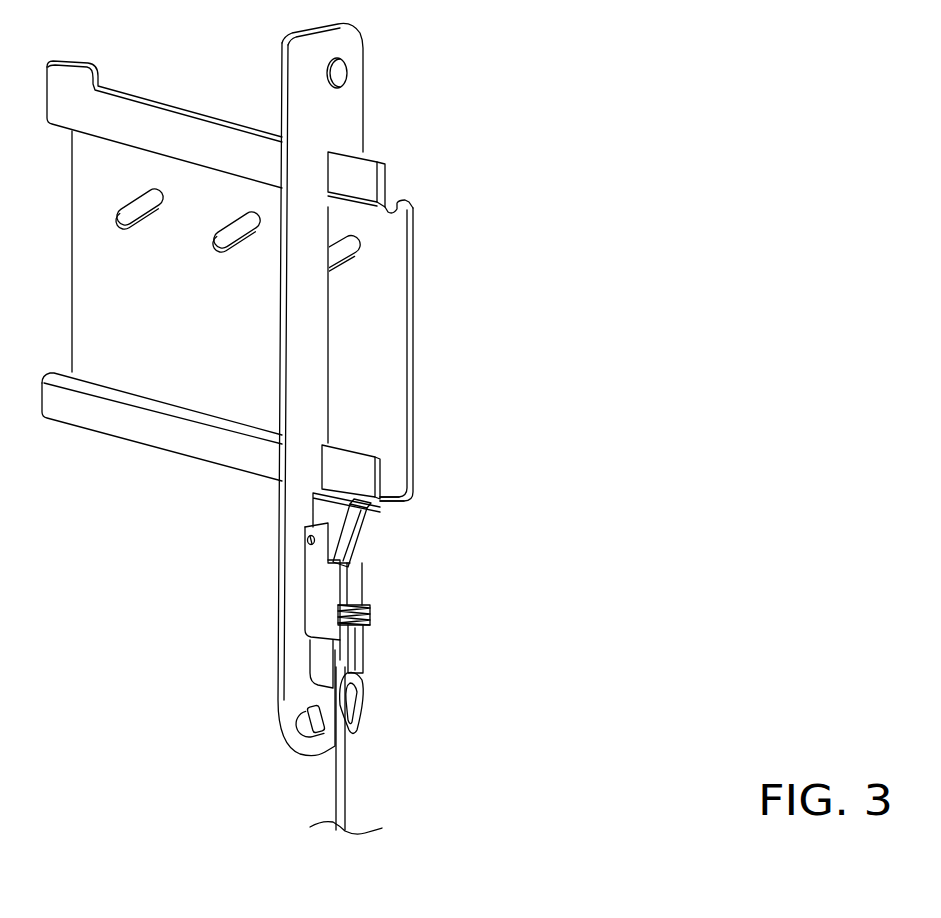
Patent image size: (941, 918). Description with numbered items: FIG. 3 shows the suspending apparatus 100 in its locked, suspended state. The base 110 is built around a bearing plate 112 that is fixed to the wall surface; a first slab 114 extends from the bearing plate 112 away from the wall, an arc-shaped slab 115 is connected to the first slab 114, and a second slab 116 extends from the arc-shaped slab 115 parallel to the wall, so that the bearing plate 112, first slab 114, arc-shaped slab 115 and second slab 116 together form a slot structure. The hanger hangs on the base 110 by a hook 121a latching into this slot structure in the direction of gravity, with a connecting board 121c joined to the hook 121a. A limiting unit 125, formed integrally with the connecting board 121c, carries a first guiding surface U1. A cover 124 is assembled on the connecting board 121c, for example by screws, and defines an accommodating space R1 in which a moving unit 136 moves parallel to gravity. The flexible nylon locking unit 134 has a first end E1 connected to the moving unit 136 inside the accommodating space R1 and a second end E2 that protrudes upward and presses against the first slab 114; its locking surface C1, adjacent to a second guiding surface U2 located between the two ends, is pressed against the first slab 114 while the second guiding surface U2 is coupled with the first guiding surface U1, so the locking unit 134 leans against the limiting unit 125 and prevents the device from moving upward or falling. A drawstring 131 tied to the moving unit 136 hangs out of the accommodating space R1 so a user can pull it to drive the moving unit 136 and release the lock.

The suspending apparatus 100 is at (782, 679).
The base 110 is at (537, 173).
The bearing plate 112 is at (407, 372).
The first slab 114 is at (393, 194).
The arc-shaped slab 115 is at (372, 210).
The second slab 116 is at (370, 180).
The hook 121a is at (353, 117).
The connecting board 121c is at (367, 662).
The cover 124 is at (318, 613).
The limiting unit 125 is at (352, 552).
The drawstring 131 is at (327, 770).
The locking unit 134 is at (362, 547).
The moving unit 136 is at (353, 596).
The first end E1 is at (343, 568).
The second end E2 is at (341, 521).
The locking surface C1 is at (368, 507).
The first guiding surface U1 is at (356, 548).
The second guiding surface U2 is at (381, 523).
The accommodating space R1 is at (362, 628).